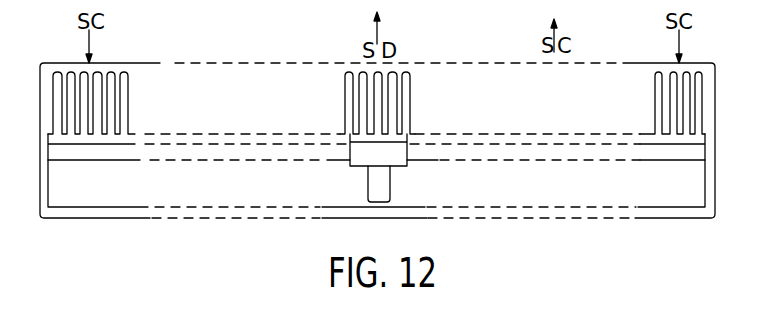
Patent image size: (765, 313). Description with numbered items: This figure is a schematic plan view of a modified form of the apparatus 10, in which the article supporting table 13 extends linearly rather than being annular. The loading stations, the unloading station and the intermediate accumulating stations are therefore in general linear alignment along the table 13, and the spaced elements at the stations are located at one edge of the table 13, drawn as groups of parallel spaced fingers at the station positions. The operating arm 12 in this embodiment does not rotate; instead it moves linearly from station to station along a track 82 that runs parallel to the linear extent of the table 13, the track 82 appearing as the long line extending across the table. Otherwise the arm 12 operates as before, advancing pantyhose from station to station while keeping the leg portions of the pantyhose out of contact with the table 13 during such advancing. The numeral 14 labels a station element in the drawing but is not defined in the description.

The apparatus 10 is at (218, 227).
The arm 12 is at (391, 184).
The article supporting table 13 is at (203, 71).
The heat sink 14 is at (411, 127).
The track 82 is at (186, 152).